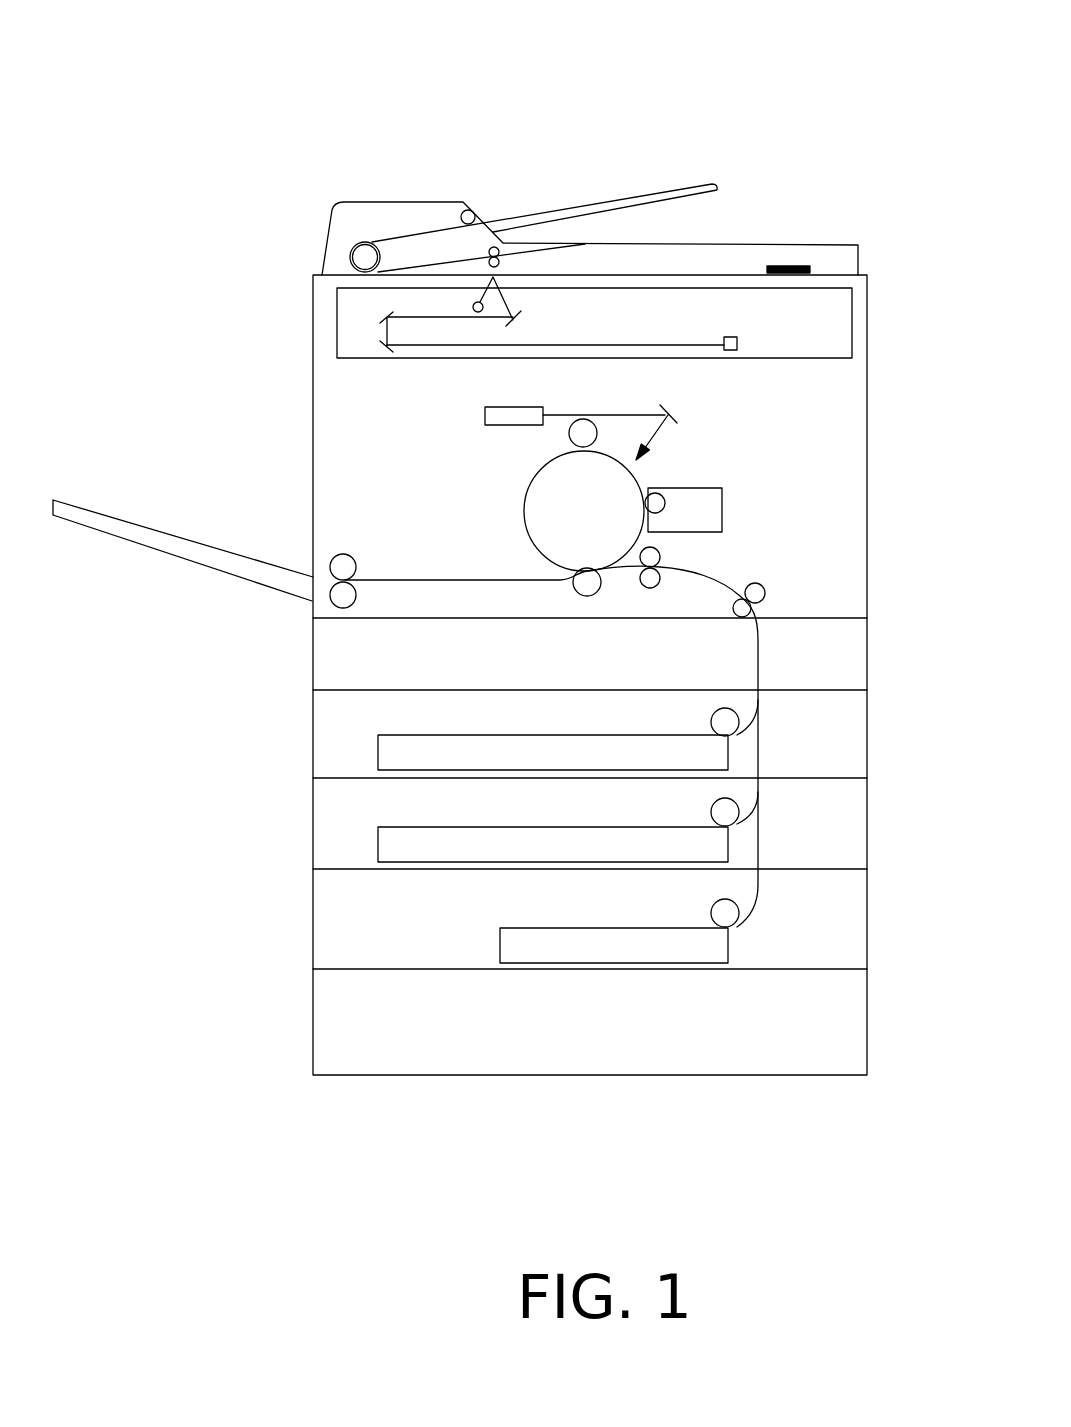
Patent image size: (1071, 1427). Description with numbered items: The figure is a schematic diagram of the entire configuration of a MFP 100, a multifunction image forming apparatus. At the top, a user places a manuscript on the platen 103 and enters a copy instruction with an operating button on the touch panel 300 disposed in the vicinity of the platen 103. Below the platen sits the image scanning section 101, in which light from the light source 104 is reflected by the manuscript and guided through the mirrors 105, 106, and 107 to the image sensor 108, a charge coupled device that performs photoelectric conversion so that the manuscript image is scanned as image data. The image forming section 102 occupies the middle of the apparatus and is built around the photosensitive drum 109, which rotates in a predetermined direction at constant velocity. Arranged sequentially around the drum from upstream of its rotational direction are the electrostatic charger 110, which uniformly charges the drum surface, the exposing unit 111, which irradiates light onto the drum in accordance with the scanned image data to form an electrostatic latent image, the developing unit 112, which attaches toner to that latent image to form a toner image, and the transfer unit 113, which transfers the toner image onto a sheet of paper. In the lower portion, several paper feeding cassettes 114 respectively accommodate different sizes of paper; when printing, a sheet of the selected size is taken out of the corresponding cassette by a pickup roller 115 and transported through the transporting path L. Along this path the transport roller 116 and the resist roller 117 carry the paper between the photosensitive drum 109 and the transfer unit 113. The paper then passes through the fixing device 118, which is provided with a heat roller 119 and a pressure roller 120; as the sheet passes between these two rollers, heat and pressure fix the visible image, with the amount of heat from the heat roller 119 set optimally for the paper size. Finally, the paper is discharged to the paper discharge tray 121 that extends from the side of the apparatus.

The MFP 100 is at (602, 172).
The touch panel 300 is at (782, 262).
The platen 103 is at (837, 278).
The image scanning section 101 is at (820, 307).
The image forming section 102 is at (803, 457).
The light source 104 is at (478, 312).
The mirror 105 is at (515, 322).
The mirror 106 is at (385, 322).
The mirror 107 is at (385, 347).
The image sensor 108 is at (737, 343).
The photosensitive drum 109 is at (545, 523).
The electrostatic charger 110 is at (572, 430).
The exposing unit 111 is at (492, 413).
The developing unit 112 is at (690, 498).
The transfer unit 113 is at (592, 596).
The paper feeding cassette 114 is at (378, 750).
The pickup roller 115 is at (723, 722).
The transport roller 116 is at (758, 590).
The resist roller 117 is at (650, 588).
The fixing device 118 is at (250, 550).
The heat roller 119 is at (340, 556).
The pressure roller 120 is at (333, 586).
The paper discharge tray 121 is at (68, 510).
The transporting path L is at (712, 580).